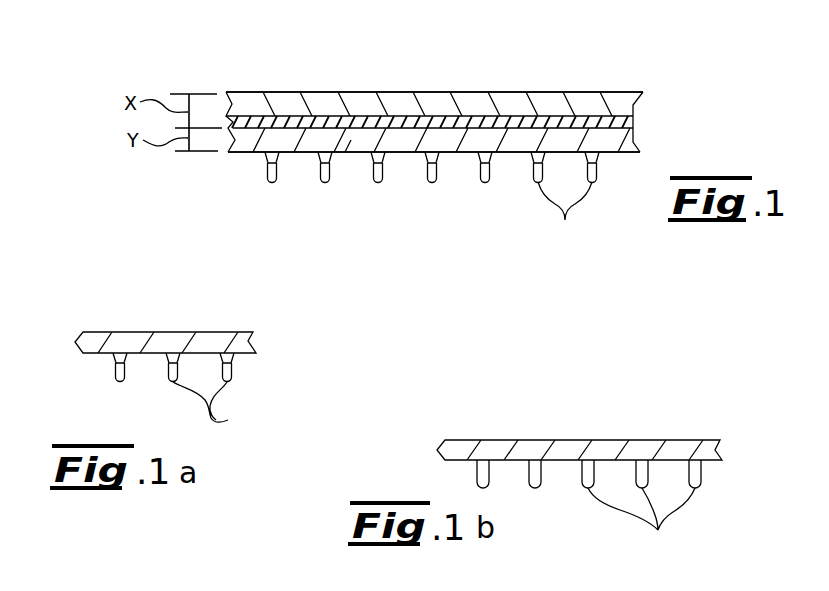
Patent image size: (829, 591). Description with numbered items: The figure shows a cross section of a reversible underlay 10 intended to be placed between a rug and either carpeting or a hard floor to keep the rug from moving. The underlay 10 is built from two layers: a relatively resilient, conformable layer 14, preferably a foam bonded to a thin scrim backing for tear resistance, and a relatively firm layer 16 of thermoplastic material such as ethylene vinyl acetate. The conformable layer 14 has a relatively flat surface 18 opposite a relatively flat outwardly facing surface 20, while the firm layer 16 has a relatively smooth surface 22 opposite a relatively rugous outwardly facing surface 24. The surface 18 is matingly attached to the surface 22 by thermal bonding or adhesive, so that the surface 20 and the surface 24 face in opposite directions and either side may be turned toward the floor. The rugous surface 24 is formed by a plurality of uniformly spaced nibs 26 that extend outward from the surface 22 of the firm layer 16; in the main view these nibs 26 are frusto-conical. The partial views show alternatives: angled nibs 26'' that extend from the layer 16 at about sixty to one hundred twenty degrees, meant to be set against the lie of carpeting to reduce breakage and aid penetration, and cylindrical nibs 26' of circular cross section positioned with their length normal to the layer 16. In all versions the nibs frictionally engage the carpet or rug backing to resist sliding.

In FIG. 1, the reversible underlay 10 is at (311, 90).
In FIG. 1, the relatively resilient, conformable layer 14 is at (510, 105).
In FIG. 1, the relatively firm layer 16 is at (635, 144).
In FIG. 1A, the relatively firm layer 16 is at (200, 338).
In FIG. 1B, the relatively firm layer 16 is at (670, 447).
In FIG. 1, the relatively flat surface 18 is at (635, 122).
In FIG. 1, the relatively flat outwardly facing surface 20 is at (390, 92).
In FIG. 1, the relatively smooth surface 22 is at (358, 138).
In FIG. 1A, the relatively smooth surface 22 is at (143, 331).
In FIG. 1B, the relatively smooth surface 22 is at (535, 438).
In FIG. 1, the relatively rugous outwardly facing surface 24 is at (432, 190).
In FIG. 1, the nibs 26 is at (556, 220).
In FIG. 1A, the angled nibs 26'' is at (204, 387).
In FIG. 1B, the cylindrical nibs 26' is at (589, 523).